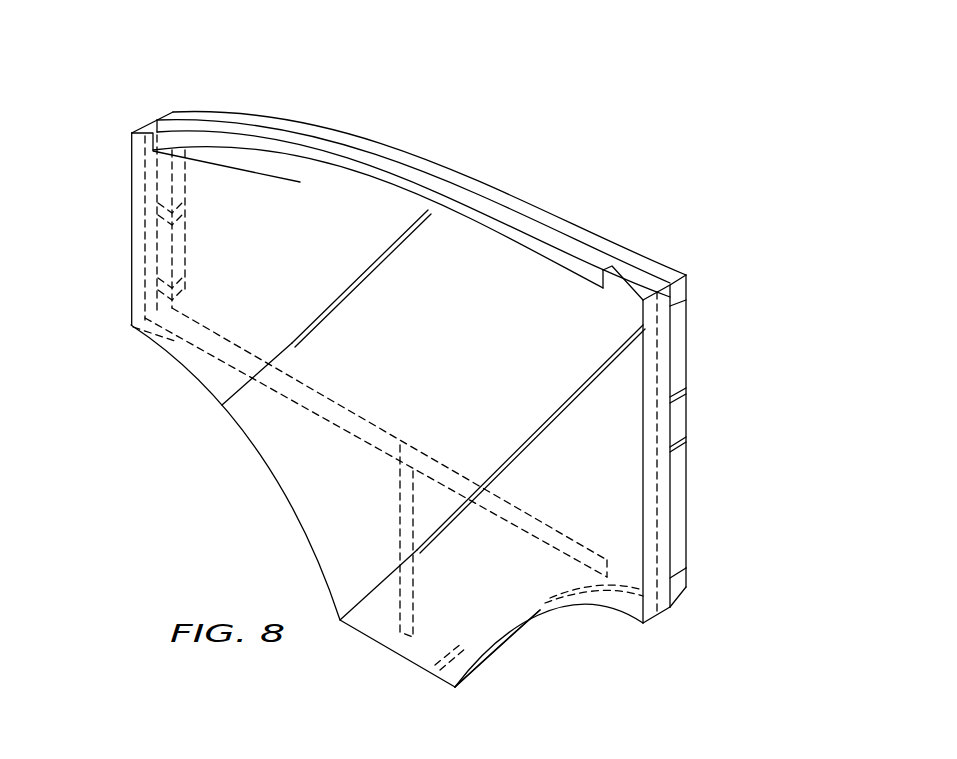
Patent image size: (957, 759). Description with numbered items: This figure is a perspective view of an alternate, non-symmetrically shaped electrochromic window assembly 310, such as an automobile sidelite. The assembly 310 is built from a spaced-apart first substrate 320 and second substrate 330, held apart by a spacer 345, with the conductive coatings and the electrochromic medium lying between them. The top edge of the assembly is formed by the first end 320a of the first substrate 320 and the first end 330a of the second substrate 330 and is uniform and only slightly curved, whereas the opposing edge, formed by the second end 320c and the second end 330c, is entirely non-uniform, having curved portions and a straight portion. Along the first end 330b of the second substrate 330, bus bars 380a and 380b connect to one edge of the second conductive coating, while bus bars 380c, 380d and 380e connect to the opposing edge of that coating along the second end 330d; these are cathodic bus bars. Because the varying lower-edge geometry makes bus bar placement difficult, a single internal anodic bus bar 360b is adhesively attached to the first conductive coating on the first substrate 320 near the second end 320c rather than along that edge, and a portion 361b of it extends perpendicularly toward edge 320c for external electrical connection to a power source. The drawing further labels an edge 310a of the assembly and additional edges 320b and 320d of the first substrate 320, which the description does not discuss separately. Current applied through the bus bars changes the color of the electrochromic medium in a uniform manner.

The electrochromic window assembly 310 is at (248, 103).
The first substrate 320 is at (335, 205).
The first end of second substrate 330a is at (475, 180).
The module top edge 310a is at (577, 252).
The first end of first substrate 320a is at (627, 282).
The second substrate 330 is at (668, 273).
The spacer 345 is at (665, 343).
The bus bar 380c is at (678, 362).
The bus bar 380d is at (678, 418).
The bus bar 380e is at (678, 507).
The second end of second substrate 330d is at (678, 587).
The panel lower right edge 320d is at (660, 607).
The second end of first substrate 320c is at (470, 675).
The second end of second substrate 330c is at (500, 657).
The bus bar 360b is at (533, 523).
The portion of internal bus bar 361b is at (398, 607).
The panel left edge 320b is at (131, 291).
The first end of second substrate 330b is at (147, 213).
The bus bar 380a is at (188, 193).
The bus bar 380b is at (187, 255).